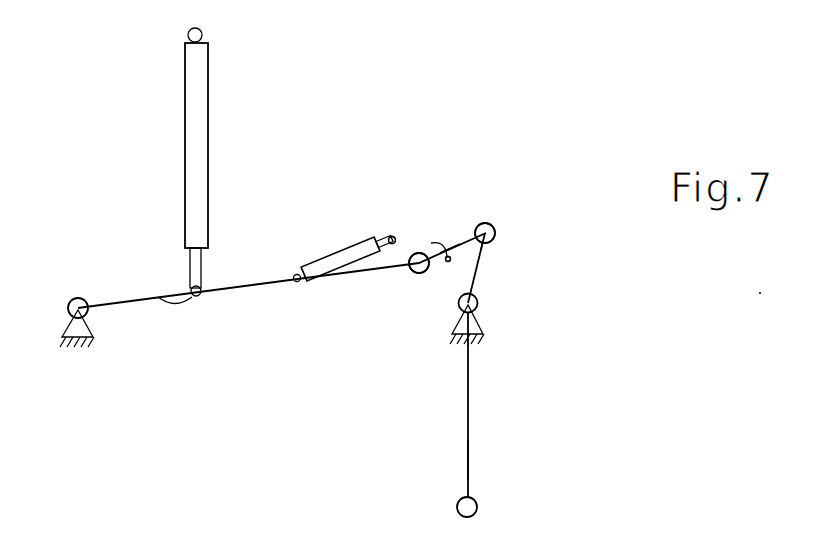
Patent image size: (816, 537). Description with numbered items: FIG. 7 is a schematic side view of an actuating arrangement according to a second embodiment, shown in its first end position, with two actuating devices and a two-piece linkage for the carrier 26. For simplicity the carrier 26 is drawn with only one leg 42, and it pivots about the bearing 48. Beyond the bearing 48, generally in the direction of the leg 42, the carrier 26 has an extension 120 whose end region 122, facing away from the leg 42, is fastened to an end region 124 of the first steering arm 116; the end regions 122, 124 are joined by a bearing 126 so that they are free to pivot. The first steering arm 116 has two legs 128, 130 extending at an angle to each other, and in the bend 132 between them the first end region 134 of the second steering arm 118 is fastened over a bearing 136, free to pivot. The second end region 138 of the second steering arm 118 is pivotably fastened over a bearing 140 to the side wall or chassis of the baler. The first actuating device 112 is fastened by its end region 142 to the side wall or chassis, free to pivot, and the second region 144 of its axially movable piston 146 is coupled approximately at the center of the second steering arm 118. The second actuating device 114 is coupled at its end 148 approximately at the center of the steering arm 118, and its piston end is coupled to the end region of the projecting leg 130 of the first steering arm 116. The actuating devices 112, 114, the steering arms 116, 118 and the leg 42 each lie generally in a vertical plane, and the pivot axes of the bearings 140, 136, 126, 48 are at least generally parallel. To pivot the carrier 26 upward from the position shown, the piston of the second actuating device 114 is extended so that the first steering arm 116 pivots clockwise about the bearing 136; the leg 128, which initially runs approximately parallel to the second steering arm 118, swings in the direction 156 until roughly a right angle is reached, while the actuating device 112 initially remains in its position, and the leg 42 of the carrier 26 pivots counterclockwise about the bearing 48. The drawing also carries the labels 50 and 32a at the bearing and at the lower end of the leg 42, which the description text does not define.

The actuating device 112 is at (227, 66).
The end region 142 is at (190, 66).
The piston 146 is at (190, 260).
The second steering arm 118 is at (135, 308).
The second region 144 is at (158, 297).
The second end region 138 is at (90, 300).
The bearing 140 is at (68, 312).
The second actuating device 114 is at (320, 249).
The end 148 is at (297, 281).
The leg 130 is at (394, 240).
The first end region 134 is at (413, 268).
The bearing 136 is at (416, 270).
The bend 132 is at (417, 253).
The first steering arm 116 is at (428, 275).
The direction 156 is at (438, 243).
The leg 128 is at (457, 250).
The end region 124 is at (478, 228).
The bearing 126 is at (487, 225).
The extension 120 is at (478, 270).
The end region 122 is at (486, 243).
The pivot 50 is at (479, 298).
The bearing 48 is at (473, 308).
The leg 42 is at (468, 397).
The carrier 26 is at (482, 459).
The roller 32a is at (477, 507).